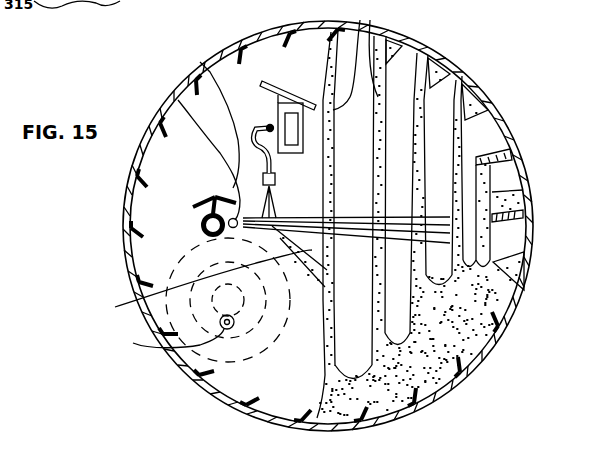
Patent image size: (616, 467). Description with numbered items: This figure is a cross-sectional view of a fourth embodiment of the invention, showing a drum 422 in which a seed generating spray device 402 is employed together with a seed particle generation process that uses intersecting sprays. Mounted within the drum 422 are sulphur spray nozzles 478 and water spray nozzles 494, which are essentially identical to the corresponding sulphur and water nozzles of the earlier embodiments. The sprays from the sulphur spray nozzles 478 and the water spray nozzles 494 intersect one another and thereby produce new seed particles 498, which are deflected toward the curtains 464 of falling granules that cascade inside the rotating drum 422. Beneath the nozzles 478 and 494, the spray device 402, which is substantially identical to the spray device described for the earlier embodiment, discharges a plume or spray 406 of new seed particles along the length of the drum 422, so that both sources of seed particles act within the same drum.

The drum 422 is at (435, 44).
The curtains of falling granules 464 is at (360, 20).
The water spray nozzle 494 is at (200, 62).
The sulphur spray nozzle 478 is at (178, 100).
The plume or spray of new seed particles 406 is at (178, 255).
The new seed particles 498 is at (196, 286).
The seed generating spray device 402 is at (167, 336).